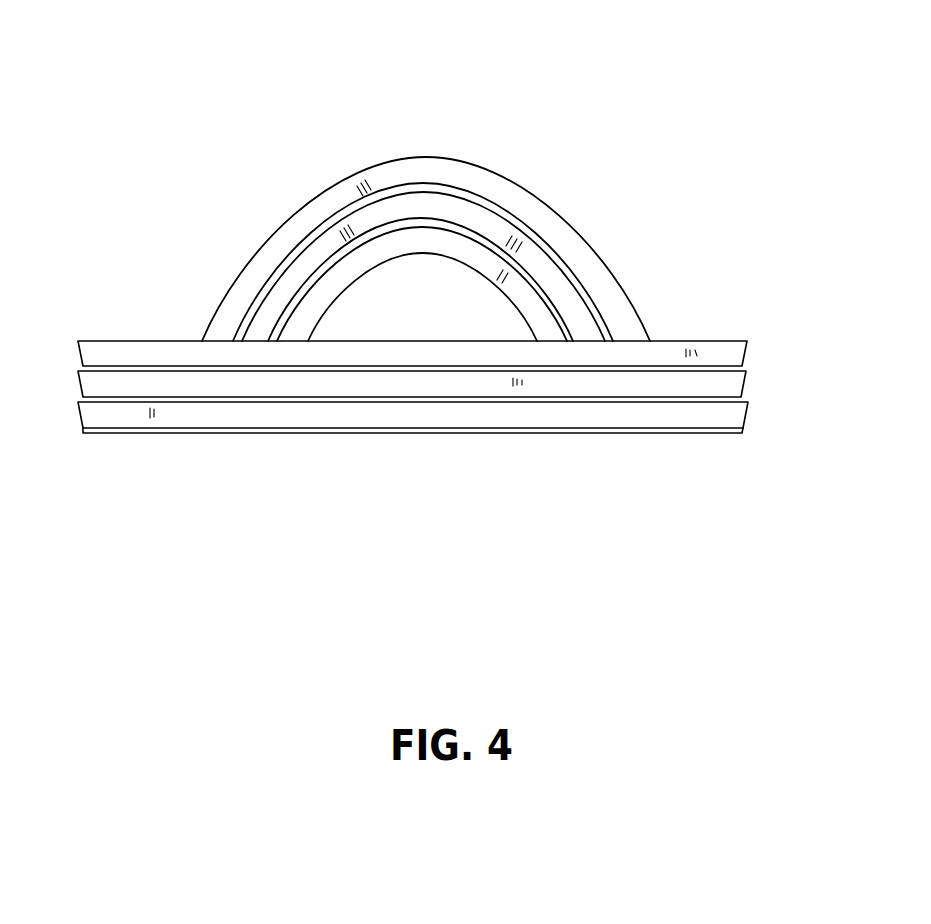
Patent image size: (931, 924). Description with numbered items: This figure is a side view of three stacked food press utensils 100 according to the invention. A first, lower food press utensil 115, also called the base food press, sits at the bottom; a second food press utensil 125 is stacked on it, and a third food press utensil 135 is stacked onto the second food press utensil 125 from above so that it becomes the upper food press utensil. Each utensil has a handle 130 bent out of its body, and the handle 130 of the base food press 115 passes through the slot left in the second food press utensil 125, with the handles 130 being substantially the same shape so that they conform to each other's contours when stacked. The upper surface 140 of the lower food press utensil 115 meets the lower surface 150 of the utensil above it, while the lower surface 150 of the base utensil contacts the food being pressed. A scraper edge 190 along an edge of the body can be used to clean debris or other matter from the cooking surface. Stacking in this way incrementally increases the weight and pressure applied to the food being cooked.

The food press utensil 100 is at (369, 106).
The handle 130 is at (504, 188).
The third food press utensil 135 is at (735, 354).
The second food press utensil 125 is at (748, 388).
The first, lower food press utensil 115 is at (738, 418).
The upper surface 140 is at (85, 400).
The lower surface 150 is at (222, 365).
The scraper edge 190 is at (573, 432).